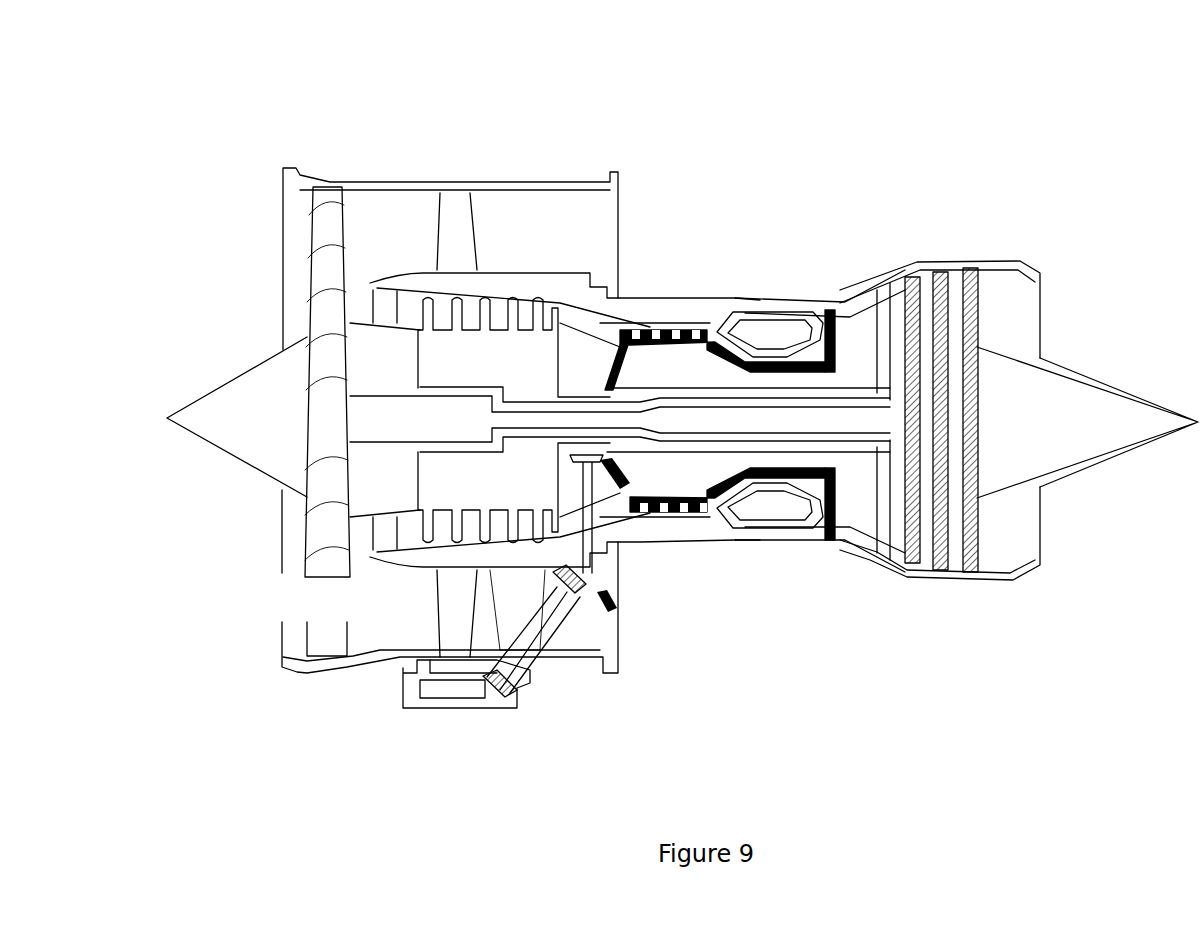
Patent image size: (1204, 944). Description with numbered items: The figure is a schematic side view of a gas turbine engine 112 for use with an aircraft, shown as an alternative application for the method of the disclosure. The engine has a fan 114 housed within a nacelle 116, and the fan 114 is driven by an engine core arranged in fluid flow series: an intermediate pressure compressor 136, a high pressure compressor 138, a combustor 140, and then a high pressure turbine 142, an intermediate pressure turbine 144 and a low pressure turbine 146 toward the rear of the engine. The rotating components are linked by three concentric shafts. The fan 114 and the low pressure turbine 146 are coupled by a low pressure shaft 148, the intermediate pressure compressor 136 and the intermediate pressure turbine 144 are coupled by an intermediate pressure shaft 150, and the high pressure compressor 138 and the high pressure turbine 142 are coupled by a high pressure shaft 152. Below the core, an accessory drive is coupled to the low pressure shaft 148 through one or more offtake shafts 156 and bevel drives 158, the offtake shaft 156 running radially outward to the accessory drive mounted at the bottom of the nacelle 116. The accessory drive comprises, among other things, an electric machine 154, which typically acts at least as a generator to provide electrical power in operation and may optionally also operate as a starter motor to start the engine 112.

The gas turbine engine 112 is at (786, 158).
The fan 114 is at (315, 252).
The nacelle 116 is at (418, 195).
The intermediate pressure compressor 136 is at (518, 303).
The high pressure compressor 138 is at (642, 330).
The combustor 140 is at (775, 310).
The high pressure turbine 142 is at (830, 310).
The intermediate pressure turbine 144 is at (893, 540).
The low pressure turbine 146 is at (983, 577).
The low pressure shaft 148 is at (400, 445).
The intermediate pressure shaft 150 is at (775, 463).
The high pressure shaft 152 is at (860, 447).
The electric machine 154 is at (397, 693).
The offtake shaft 156 is at (503, 615).
The bevel drive 158 is at (600, 597).